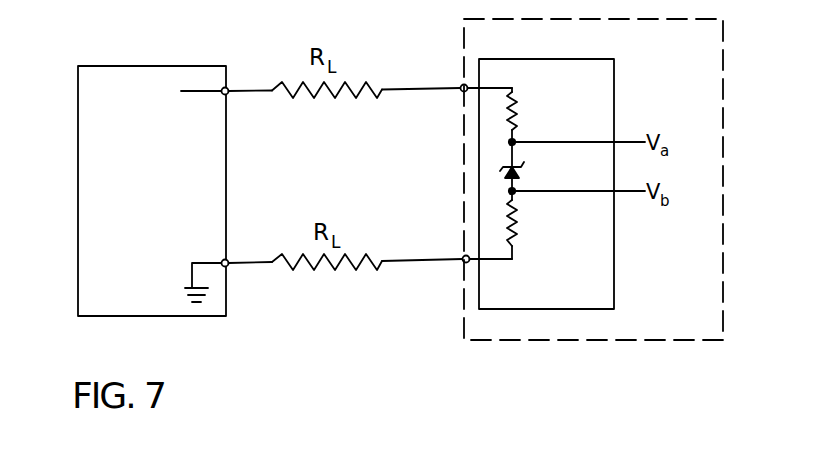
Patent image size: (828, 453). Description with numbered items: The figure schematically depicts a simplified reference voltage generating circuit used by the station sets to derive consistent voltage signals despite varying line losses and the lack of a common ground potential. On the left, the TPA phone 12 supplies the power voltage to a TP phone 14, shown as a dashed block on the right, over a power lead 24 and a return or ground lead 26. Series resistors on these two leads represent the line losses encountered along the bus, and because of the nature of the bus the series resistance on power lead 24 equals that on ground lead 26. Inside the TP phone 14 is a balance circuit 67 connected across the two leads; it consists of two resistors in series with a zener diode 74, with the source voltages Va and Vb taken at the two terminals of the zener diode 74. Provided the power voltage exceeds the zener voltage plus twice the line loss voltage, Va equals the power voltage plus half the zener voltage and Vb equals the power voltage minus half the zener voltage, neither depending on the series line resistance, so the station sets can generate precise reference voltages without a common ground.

The TPA phone 12 is at (88, 195).
The power lead 24 is at (412, 90).
The ground lead 26 is at (398, 260).
The TP phone 14 is at (724, 120).
The balance circuit 67 is at (590, 302).
The zener diode 74 is at (501, 168).